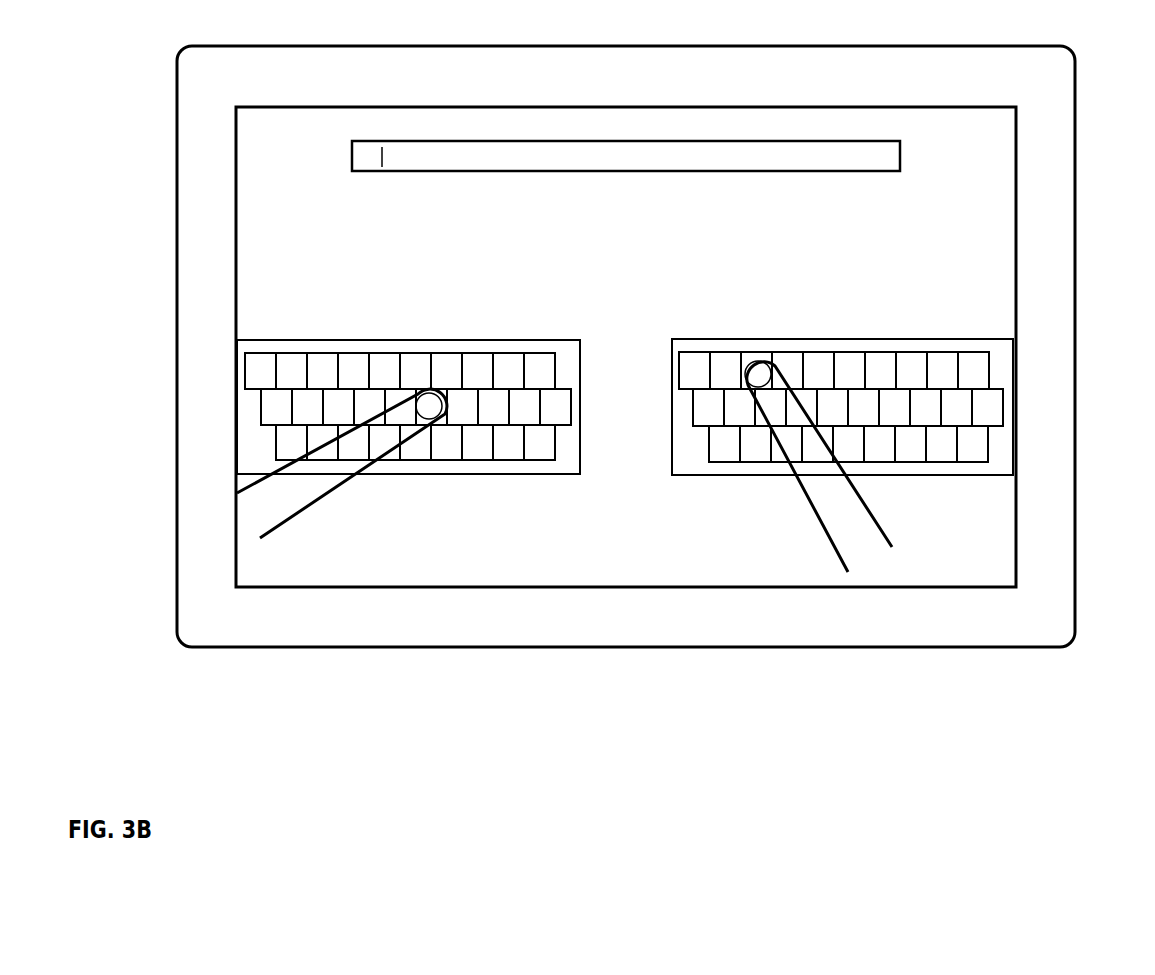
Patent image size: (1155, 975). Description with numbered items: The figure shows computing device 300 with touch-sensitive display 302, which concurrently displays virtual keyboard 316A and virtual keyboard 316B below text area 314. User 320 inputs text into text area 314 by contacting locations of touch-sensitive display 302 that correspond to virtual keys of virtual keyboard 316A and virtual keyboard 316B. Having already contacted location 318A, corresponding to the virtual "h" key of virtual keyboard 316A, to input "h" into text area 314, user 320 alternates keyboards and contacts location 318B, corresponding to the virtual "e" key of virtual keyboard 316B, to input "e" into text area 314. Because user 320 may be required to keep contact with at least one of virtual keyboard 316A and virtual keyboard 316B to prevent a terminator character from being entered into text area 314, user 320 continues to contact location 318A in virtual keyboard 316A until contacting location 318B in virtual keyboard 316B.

The computing device 300 is at (947, 45).
The touch-sensitive display 302 is at (265, 106).
The text area 314 is at (842, 139).
The virtual keyboard 316A is at (400, 352).
The virtual keyboard 316B is at (833, 352).
The location 318A is at (422, 418).
The location 318B is at (748, 387).
The user 320 is at (307, 514).